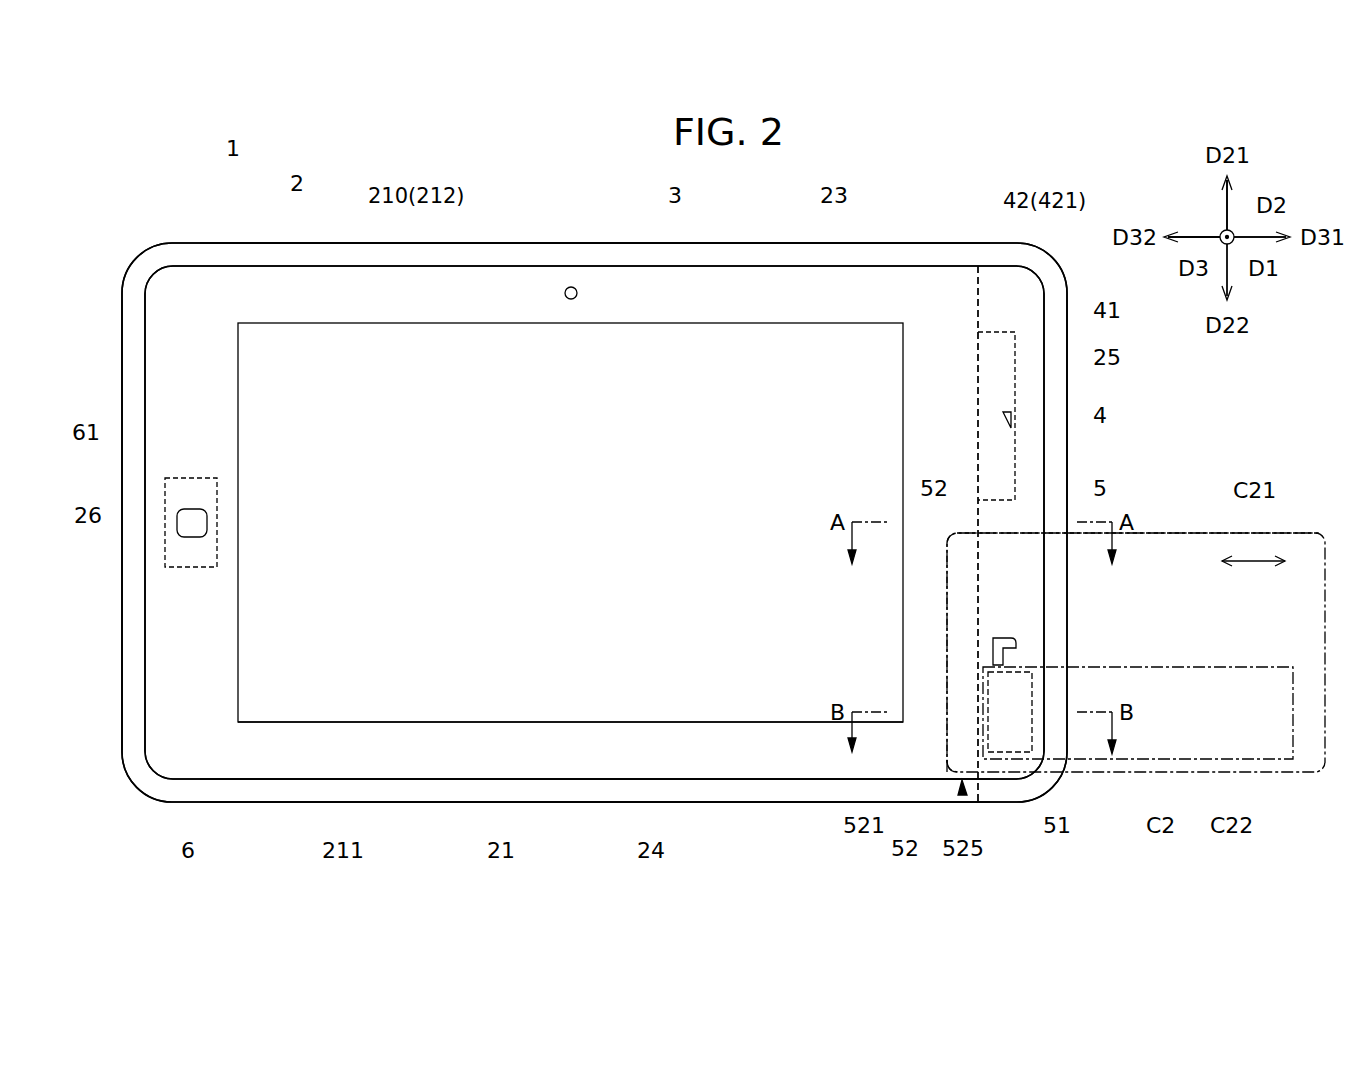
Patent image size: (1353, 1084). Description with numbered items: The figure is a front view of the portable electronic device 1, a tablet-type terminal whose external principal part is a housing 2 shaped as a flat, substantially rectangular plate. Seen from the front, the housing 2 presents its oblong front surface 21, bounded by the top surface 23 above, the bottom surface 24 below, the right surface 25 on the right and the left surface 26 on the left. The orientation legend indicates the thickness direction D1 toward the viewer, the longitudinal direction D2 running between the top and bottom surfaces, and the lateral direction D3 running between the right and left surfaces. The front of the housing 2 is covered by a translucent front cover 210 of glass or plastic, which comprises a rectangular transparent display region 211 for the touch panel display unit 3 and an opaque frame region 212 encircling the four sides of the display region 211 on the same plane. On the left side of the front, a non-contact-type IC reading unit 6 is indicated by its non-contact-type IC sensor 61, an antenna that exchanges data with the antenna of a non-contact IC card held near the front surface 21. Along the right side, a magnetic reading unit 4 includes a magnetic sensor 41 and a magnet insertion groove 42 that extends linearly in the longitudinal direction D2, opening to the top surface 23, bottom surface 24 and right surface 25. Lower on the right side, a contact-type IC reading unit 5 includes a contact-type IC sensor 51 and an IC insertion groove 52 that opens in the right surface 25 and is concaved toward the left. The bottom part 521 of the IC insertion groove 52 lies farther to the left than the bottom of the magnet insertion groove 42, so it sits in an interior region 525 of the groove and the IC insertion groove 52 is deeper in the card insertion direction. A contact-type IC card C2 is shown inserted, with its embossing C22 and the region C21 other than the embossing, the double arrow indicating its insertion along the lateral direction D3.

The portable electronic device 1 is at (245, 200).
The housing 2 is at (594, 499).
The front cover 210 is at (410, 288).
The frame region 212 is at (594, 522).
The touch panel display unit 3 is at (676, 345).
The top surface 23 is at (832, 243).
The bottom surface 24 is at (650, 803).
The right surface 25 is at (1067, 357).
The left surface 26 is at (122, 512).
The front surface 21 is at (504, 780).
The display region 211 is at (338, 700).
The non-contact-type IC reading unit 6 is at (160, 627).
The non-contact-type IC sensor 61 is at (160, 502).
The magnet insertion groove 42 is at (984, 287).
The magnetic sensor 41 is at (1000, 332).
The magnetic reading unit 4 is at (1024, 420).
The contact-type IC reading unit 5 is at (1012, 612).
The IC insertion groove 52 is at (905, 828).
The bottom part of the IC insertion groove 521 is at (947, 770).
The interior region 525 is at (962, 796).
The contact-type IC sensor 51 is at (1032, 735).
The contact-type IC card C2 is at (1156, 773).
The region other than the embossing C21 is at (1257, 533).
The embossing C22 is at (1231, 760).
The thickness direction D1 is at (1258, 266).
The longitudinal direction D2 is at (1254, 204).
The lateral direction D3 is at (1192, 266).